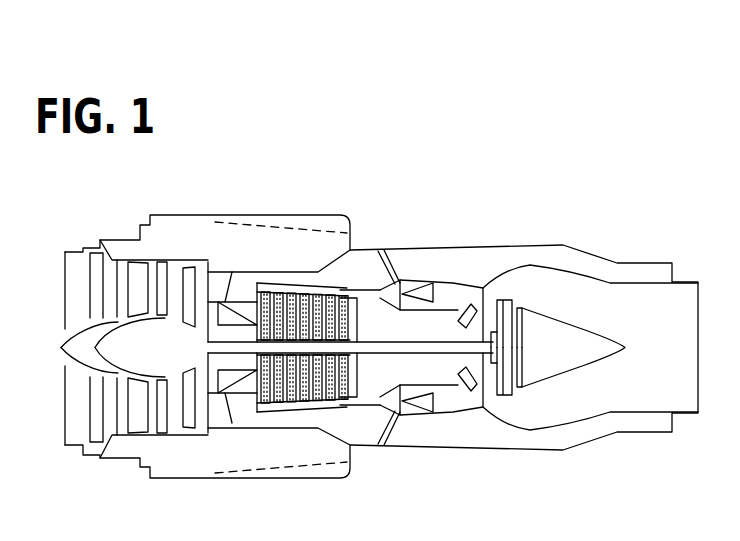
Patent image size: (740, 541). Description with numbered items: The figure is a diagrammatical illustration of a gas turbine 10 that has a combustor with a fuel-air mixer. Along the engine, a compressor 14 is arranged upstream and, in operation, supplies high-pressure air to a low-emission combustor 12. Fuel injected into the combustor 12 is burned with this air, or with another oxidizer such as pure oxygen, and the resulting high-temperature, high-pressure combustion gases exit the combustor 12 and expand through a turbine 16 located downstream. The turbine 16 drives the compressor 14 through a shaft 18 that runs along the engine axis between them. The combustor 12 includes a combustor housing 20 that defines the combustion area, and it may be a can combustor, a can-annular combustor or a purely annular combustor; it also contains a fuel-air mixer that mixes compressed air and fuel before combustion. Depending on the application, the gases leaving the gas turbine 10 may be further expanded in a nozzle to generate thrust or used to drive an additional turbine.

The gas turbine 10 is at (560, 100).
The low-emission combustor 12 is at (452, 292).
The compressor 14 is at (273, 285).
The turbine 16 is at (521, 308).
The shaft 18 is at (373, 343).
The combustor housing 20 is at (462, 412).